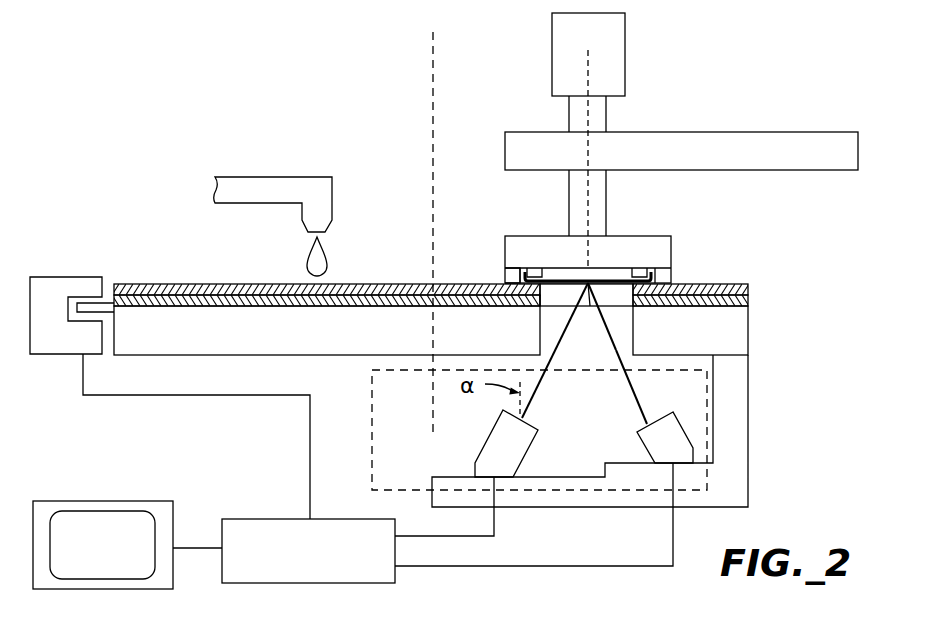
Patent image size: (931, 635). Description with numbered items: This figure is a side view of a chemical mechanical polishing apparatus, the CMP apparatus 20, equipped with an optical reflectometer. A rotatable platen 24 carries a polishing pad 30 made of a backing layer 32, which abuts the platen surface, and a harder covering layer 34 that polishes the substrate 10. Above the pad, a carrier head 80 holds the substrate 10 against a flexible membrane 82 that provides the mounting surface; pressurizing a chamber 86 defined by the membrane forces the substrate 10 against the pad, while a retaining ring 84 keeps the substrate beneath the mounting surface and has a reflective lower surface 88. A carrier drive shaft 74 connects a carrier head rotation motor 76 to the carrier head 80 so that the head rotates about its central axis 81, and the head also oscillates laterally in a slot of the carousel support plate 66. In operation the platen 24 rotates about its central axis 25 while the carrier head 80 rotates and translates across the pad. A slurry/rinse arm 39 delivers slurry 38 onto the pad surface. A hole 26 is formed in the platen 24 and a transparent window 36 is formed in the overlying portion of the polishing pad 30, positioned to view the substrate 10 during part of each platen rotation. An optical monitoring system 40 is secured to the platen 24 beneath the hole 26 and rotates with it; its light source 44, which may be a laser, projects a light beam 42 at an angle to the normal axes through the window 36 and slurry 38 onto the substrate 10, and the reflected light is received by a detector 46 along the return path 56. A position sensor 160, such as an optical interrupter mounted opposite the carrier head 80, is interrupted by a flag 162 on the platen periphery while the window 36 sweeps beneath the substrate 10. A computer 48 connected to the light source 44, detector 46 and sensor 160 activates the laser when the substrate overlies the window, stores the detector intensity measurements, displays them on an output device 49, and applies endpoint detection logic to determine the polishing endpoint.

The CMP apparatus 20 is at (200, 117).
The slurry/rinse arm 39 is at (287, 176).
The slurry 38 is at (330, 262).
The polishing pad 30 is at (187, 279).
The position sensor 160 is at (72, 357).
The flag 162 is at (108, 300).
The central axis 25 is at (434, 62).
The carrier head rotation motor 76 is at (626, 62).
The carrier drive shaft 74 is at (607, 122).
The carousel support plate 66 is at (748, 131).
The central axis 81 is at (590, 208).
The carrier head 80 is at (671, 252).
The flexible membrane 82 is at (560, 269).
The chamber 86 is at (615, 269).
The retaining ring 84 is at (507, 279).
The substrate 10 is at (672, 283).
The covering layer 34 is at (752, 288).
The backing layer 32 is at (752, 300).
The platen 24 is at (752, 330).
The hole 26 is at (636, 307).
The reflective lower surface 88 is at (535, 306).
The light beam 42 is at (548, 396).
The transparent window 36 is at (612, 314).
The reflected beam path 56 is at (641, 394).
The light source 44 is at (487, 437).
The detector 46 is at (645, 448).
The optical monitoring system 40 is at (373, 402).
The computer 48 is at (286, 519).
The output device 49 is at (155, 500).